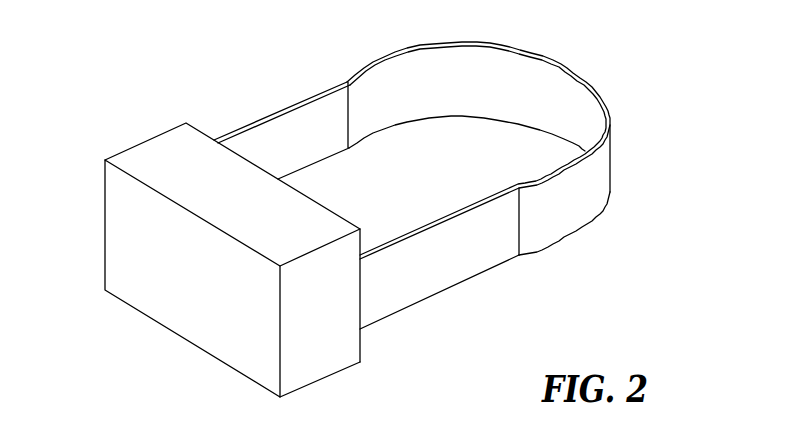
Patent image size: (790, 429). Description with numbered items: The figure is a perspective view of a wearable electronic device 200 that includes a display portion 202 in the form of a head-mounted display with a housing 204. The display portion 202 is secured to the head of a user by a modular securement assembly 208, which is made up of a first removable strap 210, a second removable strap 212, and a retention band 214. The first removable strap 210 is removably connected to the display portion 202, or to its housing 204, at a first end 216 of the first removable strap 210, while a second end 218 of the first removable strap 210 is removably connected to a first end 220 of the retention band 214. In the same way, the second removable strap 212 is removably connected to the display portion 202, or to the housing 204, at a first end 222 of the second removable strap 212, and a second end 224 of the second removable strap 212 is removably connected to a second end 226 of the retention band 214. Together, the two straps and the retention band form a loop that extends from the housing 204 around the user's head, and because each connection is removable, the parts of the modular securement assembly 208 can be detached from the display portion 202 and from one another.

The wearable electronic device 200 is at (122, 126).
The display portion 202 is at (235, 337).
The housing 204 is at (157, 305).
The modular securement assembly 208 is at (365, 58).
The first removable strap 210 is at (440, 282).
The second removable strap 212 is at (293, 128).
The retention band 214 is at (558, 85).
The first end of the first removable strap 216 is at (375, 335).
The second end of the first removable strap 218 is at (518, 273).
The first end of the retention band 220 is at (553, 248).
The first end of the second removable strap 222 is at (227, 122).
The second end of the second removable strap 224 is at (318, 78).
The second end of the retention band 226 is at (382, 145).